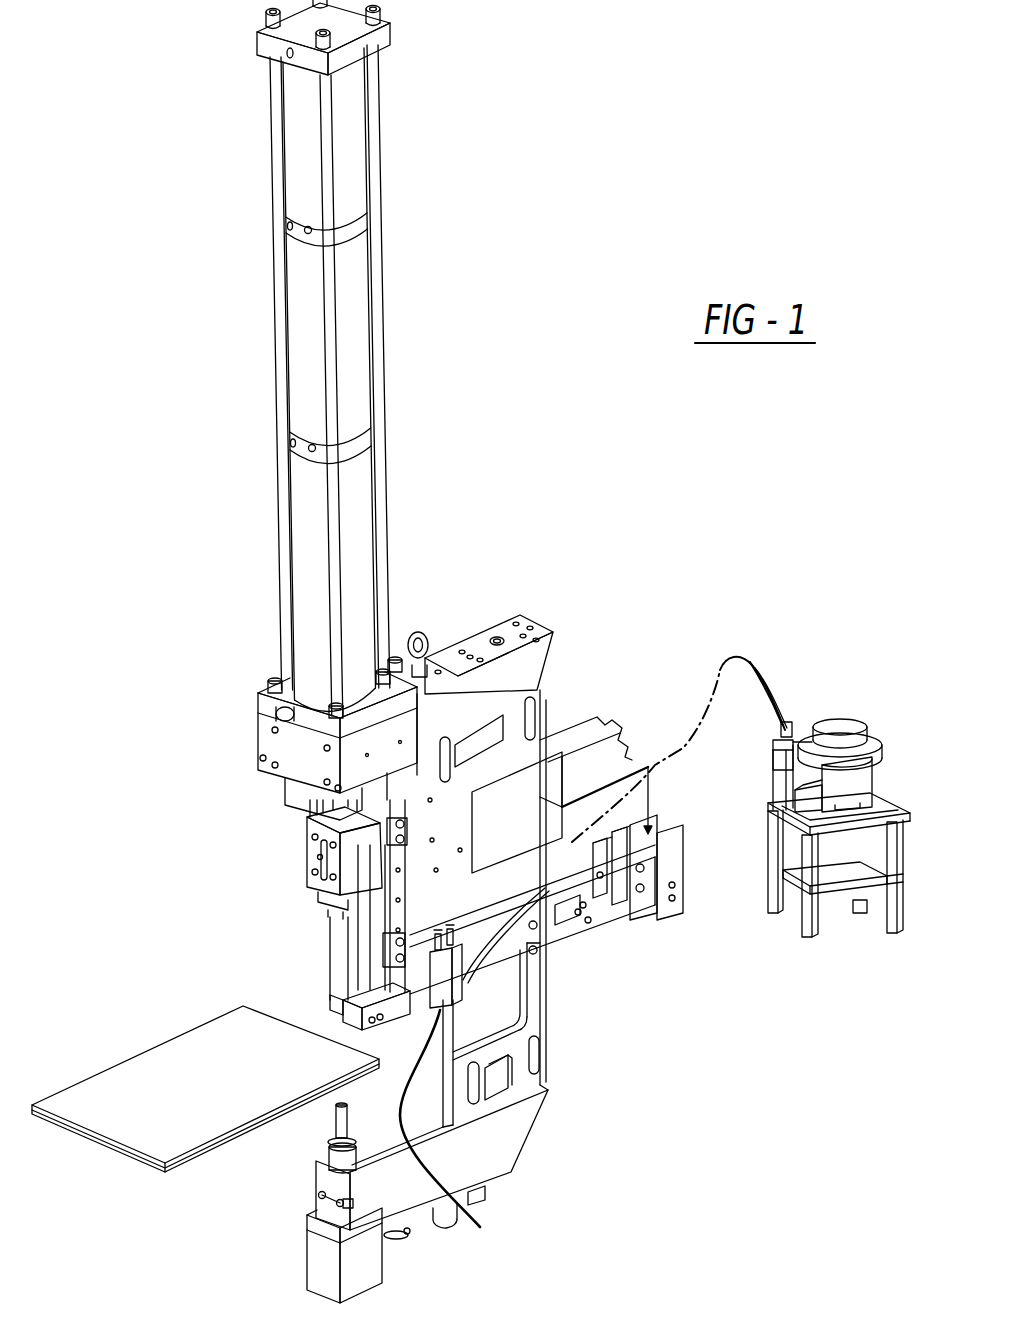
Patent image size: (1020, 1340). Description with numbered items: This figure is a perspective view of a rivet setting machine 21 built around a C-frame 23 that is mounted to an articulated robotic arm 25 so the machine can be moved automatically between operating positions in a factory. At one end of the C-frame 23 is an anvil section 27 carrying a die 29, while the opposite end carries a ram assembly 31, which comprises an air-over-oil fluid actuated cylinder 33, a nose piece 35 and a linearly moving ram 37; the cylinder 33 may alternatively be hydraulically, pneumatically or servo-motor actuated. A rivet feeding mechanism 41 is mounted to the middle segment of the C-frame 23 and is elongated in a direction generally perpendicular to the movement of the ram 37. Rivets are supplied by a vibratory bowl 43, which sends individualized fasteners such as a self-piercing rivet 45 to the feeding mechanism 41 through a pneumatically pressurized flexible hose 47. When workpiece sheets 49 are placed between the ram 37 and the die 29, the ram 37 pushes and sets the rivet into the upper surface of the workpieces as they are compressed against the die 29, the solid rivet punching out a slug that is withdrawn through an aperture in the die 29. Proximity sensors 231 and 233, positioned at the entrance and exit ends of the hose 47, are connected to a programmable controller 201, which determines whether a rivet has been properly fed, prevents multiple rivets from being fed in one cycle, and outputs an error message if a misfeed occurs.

The rivet setting machine 21 is at (470, 498).
The C-frame 23 is at (511, 1000).
The articulated robotic arm 25 is at (583, 737).
The anvil section 27 is at (487, 1148).
The die 29 is at (335, 1120).
The ram assembly 31 is at (226, 658).
The air-over-oil fluid actuated cylinder 33 is at (300, 322).
The nose piece 35 is at (323, 1018).
The linearly moving ram 37 is at (337, 938).
The rivet feeding mechanism 41 is at (560, 927).
The vibratory bowl 43 is at (835, 775).
The self-piercing rivet 45 is at (343, 1058).
The flexible hose 47 is at (765, 700).
The workpiece sheets 49 is at (85, 1103).
The programmable controller 201 is at (538, 833).
The proximity sensor 231 is at (783, 735).
The proximity sensor 233 is at (474, 1071).